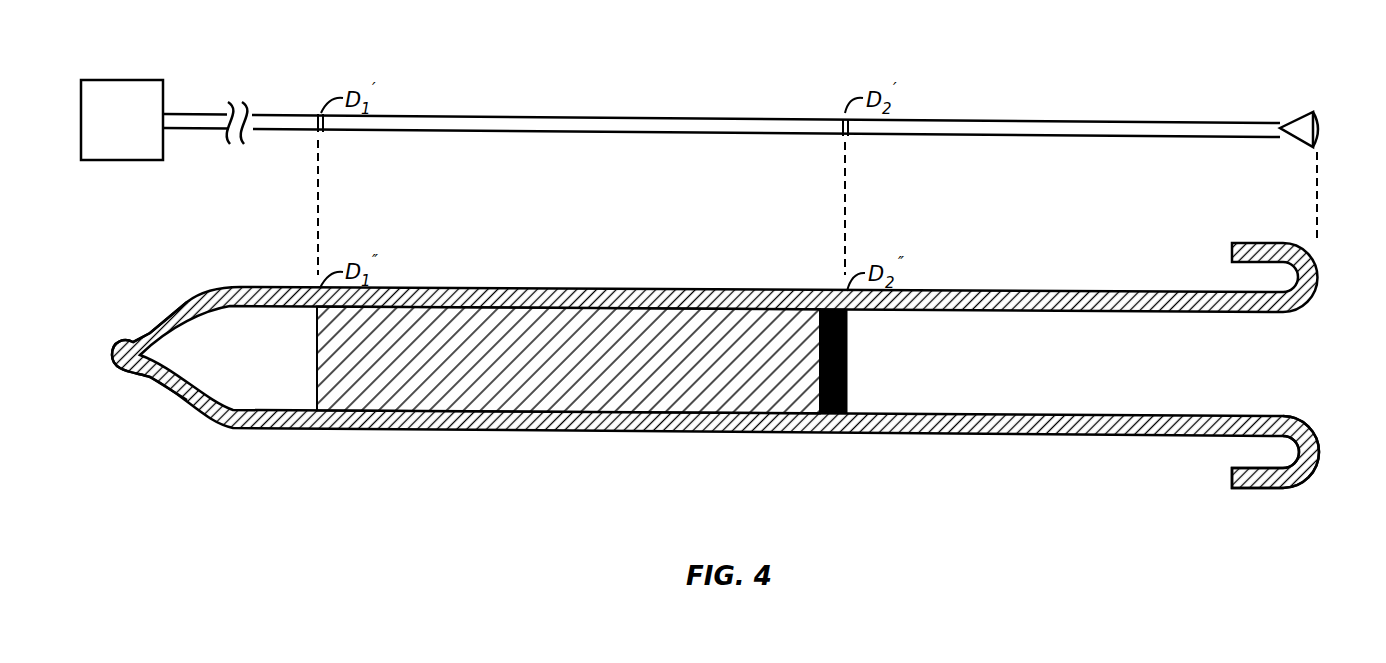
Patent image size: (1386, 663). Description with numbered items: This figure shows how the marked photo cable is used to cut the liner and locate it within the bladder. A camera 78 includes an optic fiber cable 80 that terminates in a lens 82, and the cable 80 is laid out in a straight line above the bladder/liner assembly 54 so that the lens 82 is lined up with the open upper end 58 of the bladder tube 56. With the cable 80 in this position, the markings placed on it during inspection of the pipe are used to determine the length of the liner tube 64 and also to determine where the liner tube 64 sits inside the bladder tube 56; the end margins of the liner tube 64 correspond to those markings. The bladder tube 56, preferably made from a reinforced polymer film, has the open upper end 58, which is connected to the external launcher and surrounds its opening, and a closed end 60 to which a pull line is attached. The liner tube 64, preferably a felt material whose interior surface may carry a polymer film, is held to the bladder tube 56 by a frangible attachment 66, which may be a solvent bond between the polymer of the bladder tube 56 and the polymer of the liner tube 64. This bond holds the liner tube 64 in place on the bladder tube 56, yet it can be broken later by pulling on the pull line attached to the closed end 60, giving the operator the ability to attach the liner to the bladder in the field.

The bladder/liner assembly 54 is at (266, 282).
The bladder tube 56 is at (715, 365).
The open upper end 58 is at (1318, 448).
The closed end 60 is at (146, 343).
The liner tube 64 is at (633, 402).
The frangible attachment 66 is at (847, 393).
The camera 78 is at (141, 80).
The optic fiber cable 80 is at (598, 118).
The lens 82 is at (1296, 116).